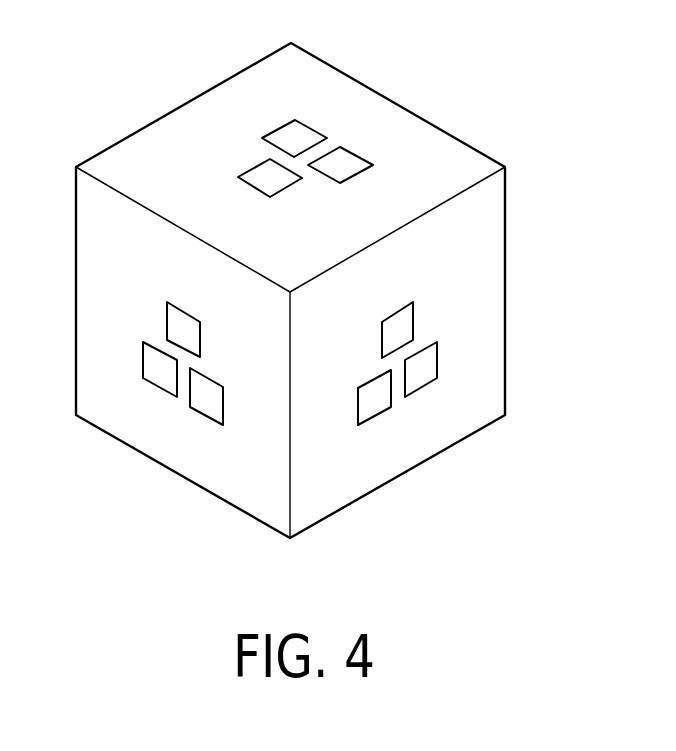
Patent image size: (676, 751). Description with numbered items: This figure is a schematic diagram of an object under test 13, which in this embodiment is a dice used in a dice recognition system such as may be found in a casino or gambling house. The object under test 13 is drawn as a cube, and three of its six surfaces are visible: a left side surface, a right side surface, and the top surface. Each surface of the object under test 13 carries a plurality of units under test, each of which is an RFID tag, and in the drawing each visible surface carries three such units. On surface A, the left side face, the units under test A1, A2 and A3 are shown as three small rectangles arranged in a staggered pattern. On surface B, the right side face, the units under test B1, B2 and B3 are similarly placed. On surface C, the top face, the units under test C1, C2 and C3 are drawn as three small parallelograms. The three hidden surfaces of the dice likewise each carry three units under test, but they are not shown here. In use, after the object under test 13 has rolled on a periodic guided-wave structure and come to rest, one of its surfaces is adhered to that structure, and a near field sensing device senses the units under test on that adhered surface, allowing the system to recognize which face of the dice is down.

The object under test 13 is at (440, 157).
The unit under test A1 is at (183, 327).
The unit under test A2 is at (157, 367).
The unit under test A3 is at (210, 405).
The unit under test B1 is at (400, 322).
The unit under test B2 is at (372, 397).
The unit under test B3 is at (418, 372).
The unit under test C1 is at (298, 137).
The unit under test C2 is at (265, 175).
The unit under test C3 is at (348, 165).